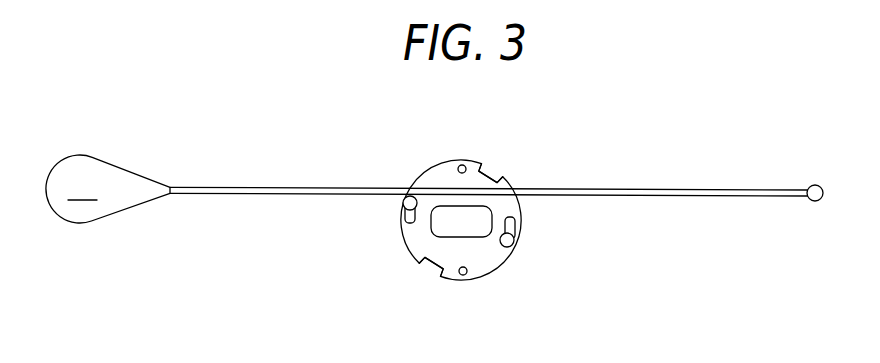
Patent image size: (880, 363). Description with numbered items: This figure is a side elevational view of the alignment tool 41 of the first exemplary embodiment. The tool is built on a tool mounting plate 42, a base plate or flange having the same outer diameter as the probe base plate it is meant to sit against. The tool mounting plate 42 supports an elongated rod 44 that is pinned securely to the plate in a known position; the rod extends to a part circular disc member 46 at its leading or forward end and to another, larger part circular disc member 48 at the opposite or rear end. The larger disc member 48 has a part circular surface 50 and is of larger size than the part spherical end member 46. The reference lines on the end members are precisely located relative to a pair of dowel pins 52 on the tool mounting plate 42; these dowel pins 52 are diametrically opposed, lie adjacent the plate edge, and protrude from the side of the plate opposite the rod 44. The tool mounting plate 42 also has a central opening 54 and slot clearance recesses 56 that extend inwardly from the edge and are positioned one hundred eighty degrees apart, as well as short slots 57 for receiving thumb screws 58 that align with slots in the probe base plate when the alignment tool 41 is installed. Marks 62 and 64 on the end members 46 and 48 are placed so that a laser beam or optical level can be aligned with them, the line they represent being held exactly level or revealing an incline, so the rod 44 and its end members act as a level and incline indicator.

The alignment tool 41 is at (456, 199).
The tool mounting plate 42 is at (437, 173).
The elongated rod 44 is at (577, 188).
The part circular disc member 46 is at (785, 159).
The part circular disc member 48 is at (62, 194).
The part circular surface 50 is at (107, 188).
The dowel pins 52 is at (462, 165).
The central opening 54 is at (443, 227).
The slot clearance recesses 56 is at (488, 172).
The short slots 57 is at (514, 222).
The thumb screws 58 is at (401, 203).
The mark 62 is at (823, 185).
The mark 64 is at (85, 200).